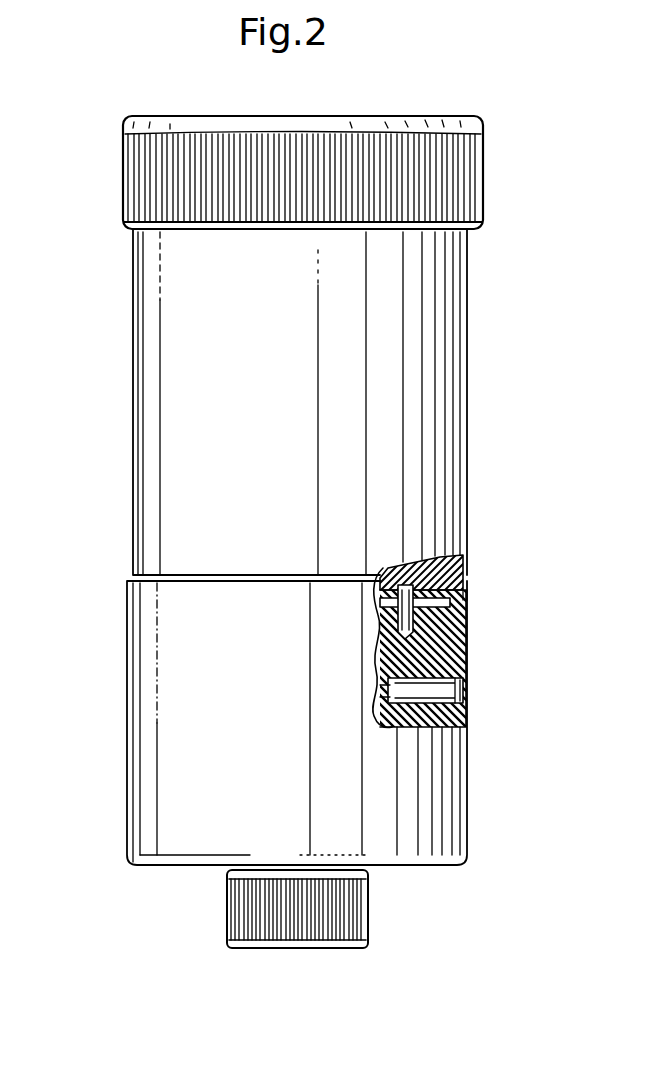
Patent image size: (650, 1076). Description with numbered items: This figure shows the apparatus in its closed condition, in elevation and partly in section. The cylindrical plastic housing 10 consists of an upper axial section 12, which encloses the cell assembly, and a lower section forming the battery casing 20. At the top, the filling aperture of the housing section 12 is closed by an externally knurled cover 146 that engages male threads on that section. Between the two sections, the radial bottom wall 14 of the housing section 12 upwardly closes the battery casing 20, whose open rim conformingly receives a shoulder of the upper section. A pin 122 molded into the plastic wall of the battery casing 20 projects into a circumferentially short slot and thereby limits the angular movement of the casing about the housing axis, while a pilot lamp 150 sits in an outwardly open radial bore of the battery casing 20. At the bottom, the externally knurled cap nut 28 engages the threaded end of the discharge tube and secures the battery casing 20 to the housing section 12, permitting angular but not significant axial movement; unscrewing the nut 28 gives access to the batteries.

The housing 10 is at (311, 532).
The upper axial section 12 is at (467, 380).
The radial bottom wall 14 is at (418, 566).
The battery casing 20 is at (467, 793).
The cap nut 28 is at (370, 915).
The pin 122 is at (401, 618).
The cover 146 is at (483, 172).
The pilot lamp 150 is at (463, 688).